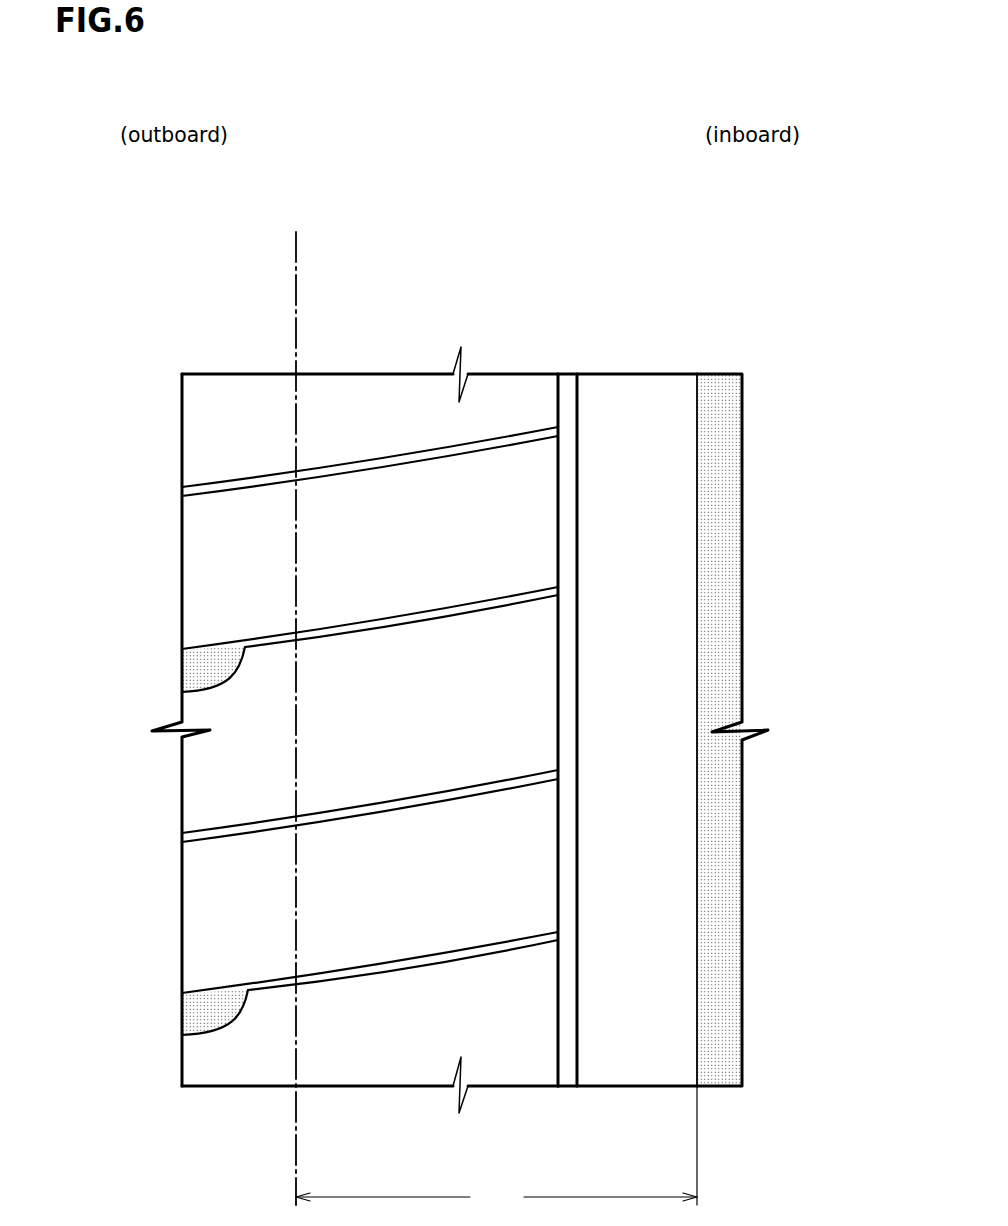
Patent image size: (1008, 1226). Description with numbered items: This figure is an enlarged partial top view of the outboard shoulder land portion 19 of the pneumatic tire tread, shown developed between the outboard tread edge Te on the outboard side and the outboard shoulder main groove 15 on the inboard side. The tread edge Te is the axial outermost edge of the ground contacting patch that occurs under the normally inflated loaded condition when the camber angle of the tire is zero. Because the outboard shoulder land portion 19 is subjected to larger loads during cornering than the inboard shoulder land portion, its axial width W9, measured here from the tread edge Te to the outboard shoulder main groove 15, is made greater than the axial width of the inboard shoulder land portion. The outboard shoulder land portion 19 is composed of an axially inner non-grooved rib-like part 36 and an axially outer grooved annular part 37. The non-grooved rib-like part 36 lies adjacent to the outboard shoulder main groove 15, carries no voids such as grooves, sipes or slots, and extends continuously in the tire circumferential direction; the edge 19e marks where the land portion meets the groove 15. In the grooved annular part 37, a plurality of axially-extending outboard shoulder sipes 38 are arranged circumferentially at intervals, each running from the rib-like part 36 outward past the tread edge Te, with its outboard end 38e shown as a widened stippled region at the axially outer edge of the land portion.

The outboard shoulder main groove 15 is at (710, 408).
The outboard shoulder land portion 19 is at (405, 265).
The inner edge of side region 19e is at (697, 580).
The inner non-grooved rib-like part 36 is at (627, 408).
The outer grooved annular part 37 is at (375, 400).
The outboard shoulder sipe 38 is at (249, 482).
The outboard end of rib 38e is at (245, 648).
The tread edge Te is at (298, 703).
The axial width of outboard shoulder land portion W9 is at (496, 1149).